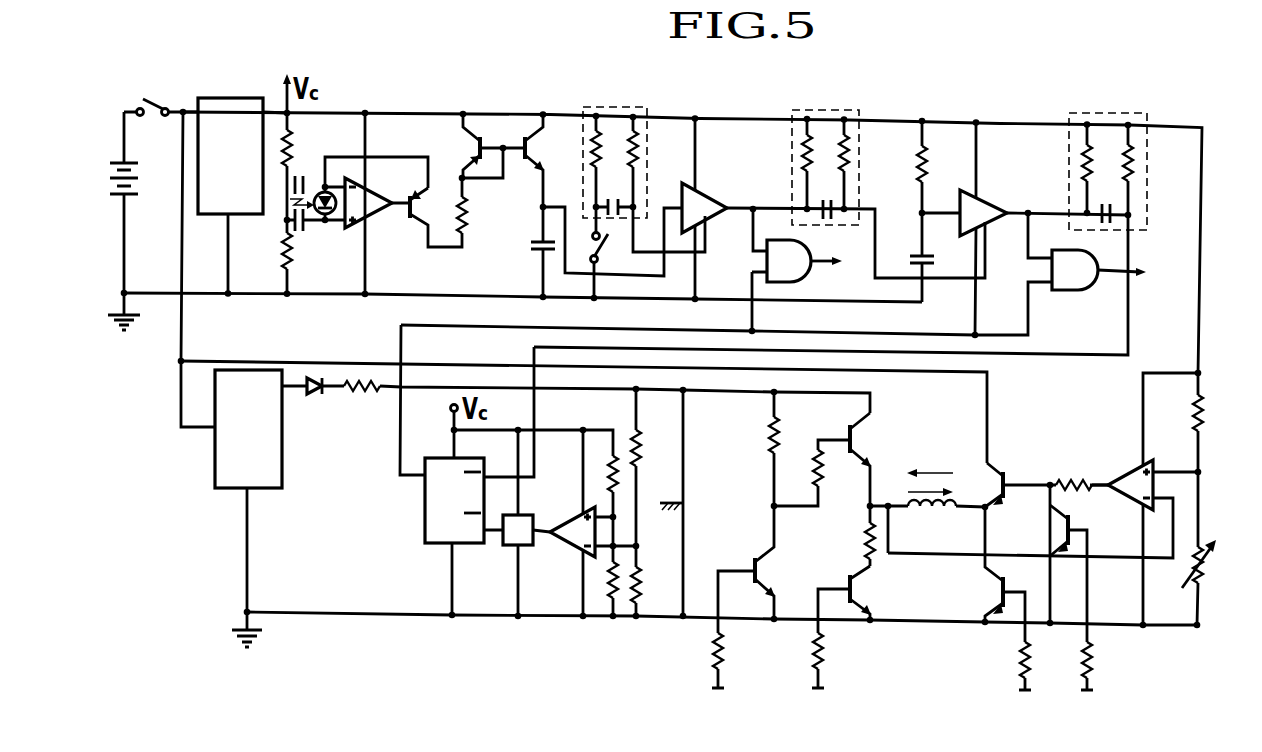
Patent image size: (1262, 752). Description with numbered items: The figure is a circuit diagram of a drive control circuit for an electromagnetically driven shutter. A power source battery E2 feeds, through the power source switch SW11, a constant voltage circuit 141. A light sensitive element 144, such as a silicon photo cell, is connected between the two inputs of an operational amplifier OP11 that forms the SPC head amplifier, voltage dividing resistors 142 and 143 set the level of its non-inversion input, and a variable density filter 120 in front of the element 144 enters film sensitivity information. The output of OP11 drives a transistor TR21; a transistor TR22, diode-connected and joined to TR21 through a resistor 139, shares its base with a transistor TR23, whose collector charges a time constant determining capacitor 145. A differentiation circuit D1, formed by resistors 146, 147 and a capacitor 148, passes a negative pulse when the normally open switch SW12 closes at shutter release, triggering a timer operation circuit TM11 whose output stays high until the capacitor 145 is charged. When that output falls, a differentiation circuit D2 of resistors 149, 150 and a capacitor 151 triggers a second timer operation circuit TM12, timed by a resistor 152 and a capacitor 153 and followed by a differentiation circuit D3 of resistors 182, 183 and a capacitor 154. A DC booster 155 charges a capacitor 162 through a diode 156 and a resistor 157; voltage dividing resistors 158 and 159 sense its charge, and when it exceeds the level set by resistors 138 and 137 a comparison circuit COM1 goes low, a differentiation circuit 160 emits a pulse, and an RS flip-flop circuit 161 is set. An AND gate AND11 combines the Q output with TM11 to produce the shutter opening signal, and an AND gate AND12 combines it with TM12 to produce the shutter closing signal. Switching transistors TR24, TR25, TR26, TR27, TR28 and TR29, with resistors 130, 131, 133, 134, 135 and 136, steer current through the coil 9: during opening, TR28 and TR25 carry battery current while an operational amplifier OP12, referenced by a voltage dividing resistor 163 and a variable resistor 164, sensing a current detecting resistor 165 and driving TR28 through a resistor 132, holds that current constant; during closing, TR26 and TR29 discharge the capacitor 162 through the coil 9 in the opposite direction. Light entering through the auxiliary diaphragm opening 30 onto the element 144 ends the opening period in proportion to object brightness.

The constant voltage circuit 141 is at (242, 197).
The voltage dividing resistor 142 is at (302, 166).
The voltage dividing resistor 143 is at (302, 257).
The auxiliary diaphragm opening 30 is at (306, 199).
The light sensitive element 144 is at (333, 195).
The variable density filter 120 is at (306, 226).
The resistor 139 is at (478, 205).
The time constant determining capacitor 145 is at (525, 253).
The resistor 146 is at (600, 160).
The resistor 147 is at (637, 162).
The capacitor 148 is at (616, 200).
The resistor 149 is at (804, 160).
The resistor 150 is at (847, 158).
The capacitor 151 is at (833, 205).
The resistor 152 is at (939, 167).
The time constant determining capacitor 153 is at (939, 257).
The capacitor 154 is at (1112, 220).
The DC booster 155 is at (248, 508).
The diode 156 is at (313, 404).
The resistor 157 is at (607, 406).
The voltage dividing resistor 158 is at (655, 469).
The voltage dividing resistor 159 is at (653, 582).
The differentiation circuit 160 is at (504, 547).
The RS flip-flop circuit 161 is at (427, 544).
The capacitor 162 is at (692, 504).
The voltage dividing resistor 163 is at (1216, 422).
The voltage dividing variable resistor 164 is at (1214, 550).
The resistor 165 is at (852, 537).
The resistor 182 is at (1084, 165).
The resistor 183 is at (1132, 162).
The resistor 130 is at (757, 450).
The resistor 131 is at (816, 473).
The resistor 132 is at (1079, 470).
The resistor 133 is at (732, 679).
The resistor 134 is at (1101, 685).
The resistor 135 is at (1038, 685).
The resistor 136 is at (832, 680).
The resistor 137 is at (609, 582).
The resistor 138 is at (609, 476).
The coil 9 is at (929, 505).
The power source battery E2 is at (137, 221).
The power source switch SW11 is at (161, 96).
The normally open switch SW12 is at (616, 254).
The operational amplifier OP11 is at (369, 190).
The operational amplifier OP12 is at (1122, 495).
The transistor TR21 is at (427, 225).
The transistor TR22 is at (475, 144).
The transistor TR23 is at (556, 160).
The switching transistor TR24 is at (765, 569).
The switching transistor TR25 is at (862, 599).
The switching transistor TR26 is at (879, 461).
The switching transistor TR27 is at (1047, 573).
The transistor TR28 is at (1002, 474).
The switching transistor TR29 is at (980, 574).
The timer operation circuit TM11 is at (706, 197).
The timer operation circuit TM12 is at (988, 207).
The AND gate AND11 is at (805, 281).
The AND gate AND12 is at (1064, 288).
The comparison circuit COM1 is at (553, 545).
The differentiation circuit D1 is at (586, 106).
The differentiation circuit D2 is at (804, 110).
The differentiation circuit D3 is at (1093, 113).